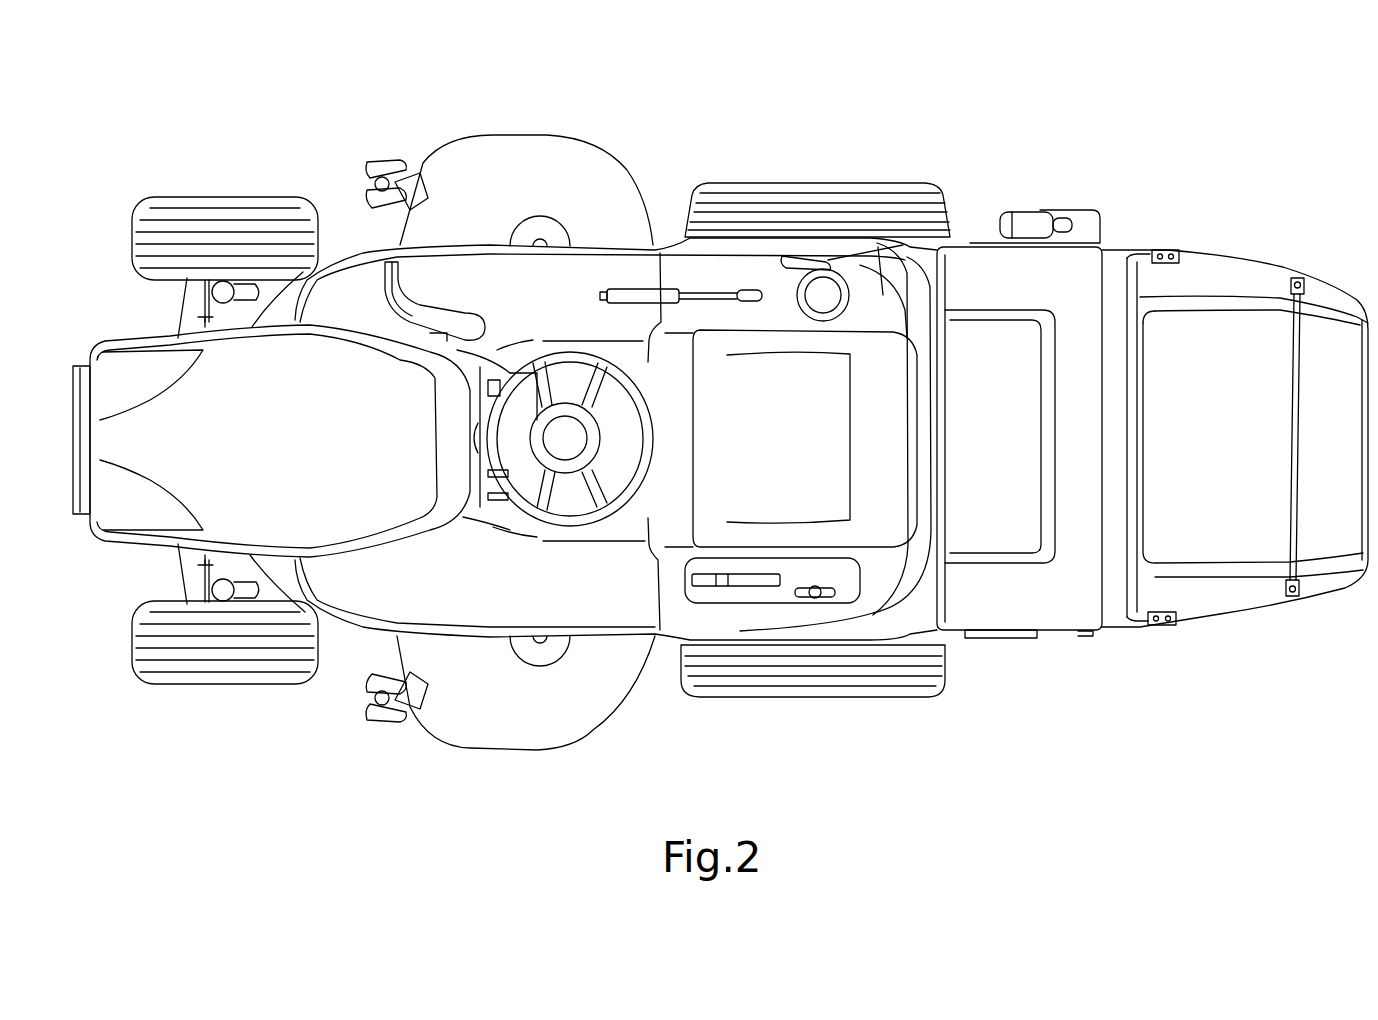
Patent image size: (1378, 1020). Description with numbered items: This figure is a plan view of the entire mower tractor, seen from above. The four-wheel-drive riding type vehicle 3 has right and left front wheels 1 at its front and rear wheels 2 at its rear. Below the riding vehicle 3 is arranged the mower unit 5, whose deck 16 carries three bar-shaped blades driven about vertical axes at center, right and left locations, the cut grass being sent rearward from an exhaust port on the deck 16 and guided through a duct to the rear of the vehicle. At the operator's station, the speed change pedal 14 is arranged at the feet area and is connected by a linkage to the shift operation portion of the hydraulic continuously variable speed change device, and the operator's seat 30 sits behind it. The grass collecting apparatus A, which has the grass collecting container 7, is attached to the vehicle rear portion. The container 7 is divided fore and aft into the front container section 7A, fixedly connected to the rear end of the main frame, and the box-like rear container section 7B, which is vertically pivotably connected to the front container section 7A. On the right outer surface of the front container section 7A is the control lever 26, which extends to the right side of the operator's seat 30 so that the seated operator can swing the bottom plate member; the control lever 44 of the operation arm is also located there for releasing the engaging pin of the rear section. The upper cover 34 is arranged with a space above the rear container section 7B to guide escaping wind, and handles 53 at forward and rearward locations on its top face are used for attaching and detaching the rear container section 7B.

The grass collecting apparatus A is at (1160, 130).
The front wheels 1 is at (213, 203).
The rear wheels 2 is at (780, 192).
The riding type vehicle 3 is at (621, 646).
The mower unit 5 is at (471, 133).
The grass collecting container 7 is at (1152, 477).
The front container section 7A is at (1018, 644).
The rear container section 7B is at (1258, 630).
The speed change pedal 14 is at (403, 293).
The deck 16 is at (527, 727).
The control lever 26 is at (748, 298).
The operator's seat 30 is at (932, 443).
The upper cover 34 is at (1235, 265).
The control lever 44 is at (1025, 218).
The handles 53 is at (1137, 453).